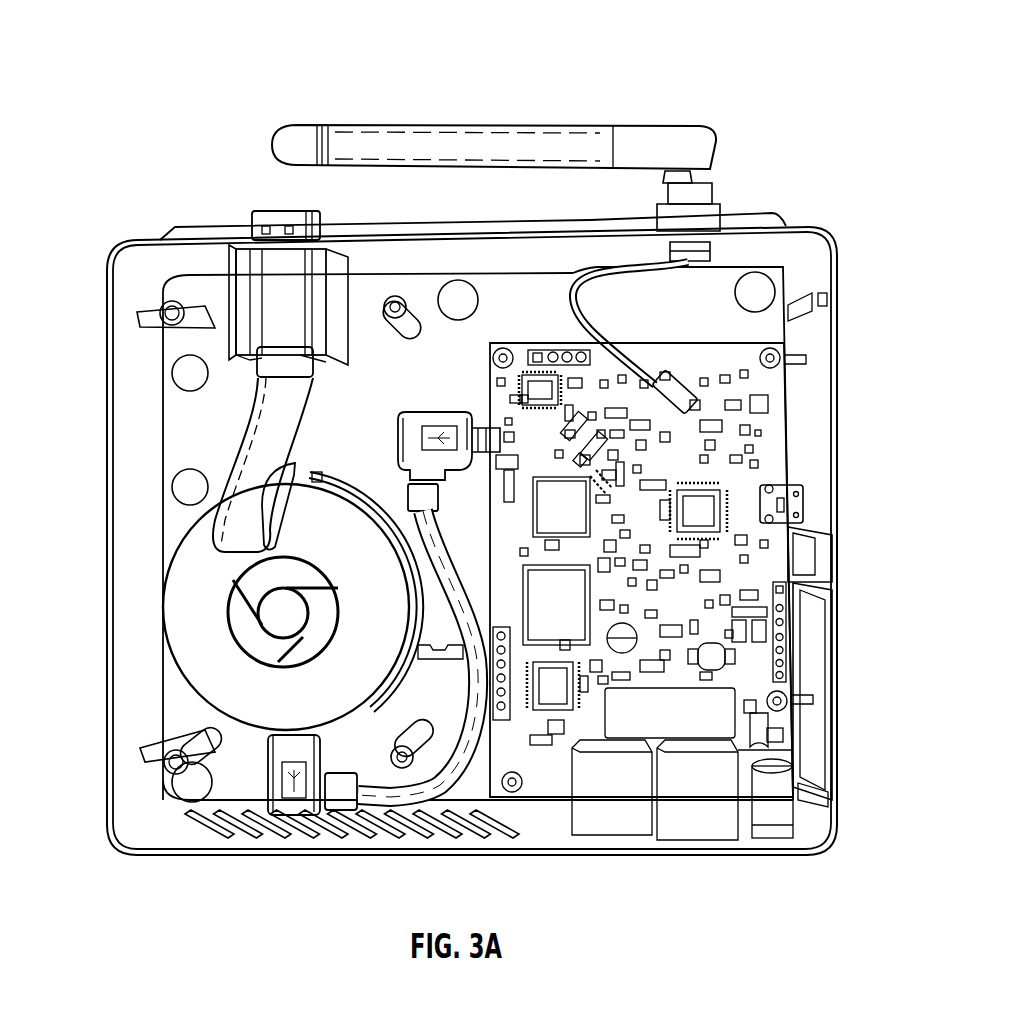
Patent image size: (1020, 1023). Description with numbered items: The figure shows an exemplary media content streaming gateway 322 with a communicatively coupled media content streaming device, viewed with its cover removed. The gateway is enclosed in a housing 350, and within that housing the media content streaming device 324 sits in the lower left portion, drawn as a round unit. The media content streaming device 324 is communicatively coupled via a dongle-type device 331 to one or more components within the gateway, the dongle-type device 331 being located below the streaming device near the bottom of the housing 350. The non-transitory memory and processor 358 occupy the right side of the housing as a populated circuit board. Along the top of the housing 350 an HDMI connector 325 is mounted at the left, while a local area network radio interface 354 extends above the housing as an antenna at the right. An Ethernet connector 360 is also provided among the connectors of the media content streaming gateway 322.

The media content streaming gateway 322 is at (704, 46).
The local area network radio interface 354 is at (632, 125).
The HDMI connector 325 is at (266, 208).
The housing 350 is at (110, 398).
The media content streaming device 324 is at (243, 623).
The Ethernet connector 360 is at (395, 481).
The dongle-type device 331 is at (347, 797).
The non-transitory memory and processor 358 is at (712, 660).